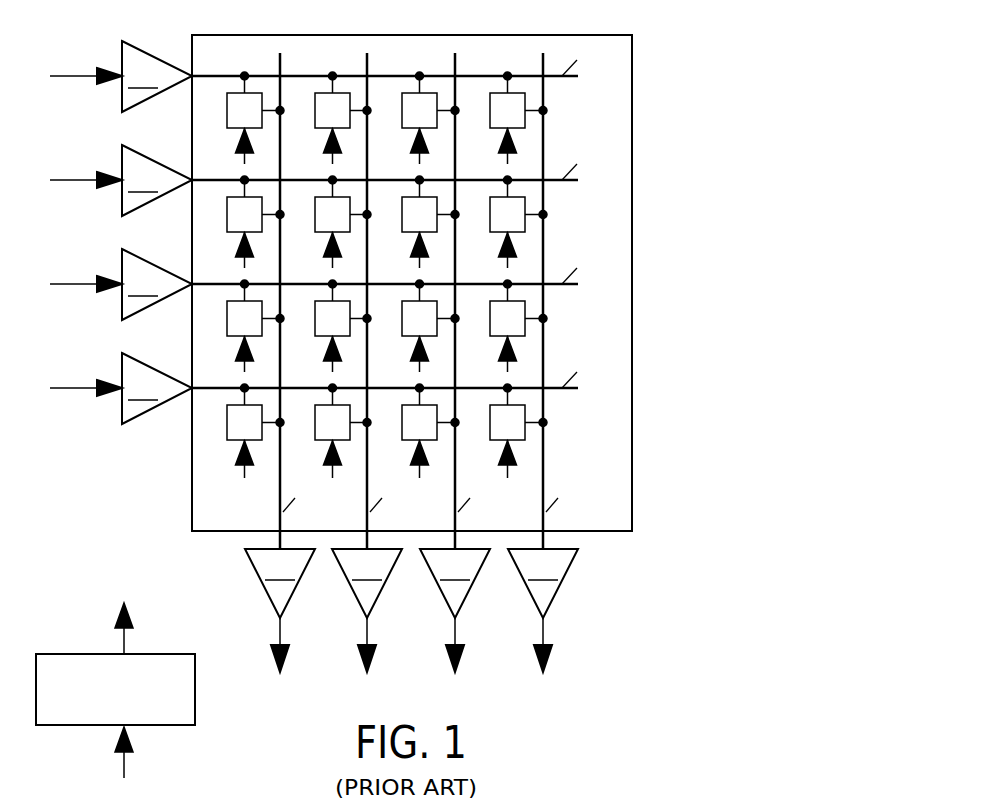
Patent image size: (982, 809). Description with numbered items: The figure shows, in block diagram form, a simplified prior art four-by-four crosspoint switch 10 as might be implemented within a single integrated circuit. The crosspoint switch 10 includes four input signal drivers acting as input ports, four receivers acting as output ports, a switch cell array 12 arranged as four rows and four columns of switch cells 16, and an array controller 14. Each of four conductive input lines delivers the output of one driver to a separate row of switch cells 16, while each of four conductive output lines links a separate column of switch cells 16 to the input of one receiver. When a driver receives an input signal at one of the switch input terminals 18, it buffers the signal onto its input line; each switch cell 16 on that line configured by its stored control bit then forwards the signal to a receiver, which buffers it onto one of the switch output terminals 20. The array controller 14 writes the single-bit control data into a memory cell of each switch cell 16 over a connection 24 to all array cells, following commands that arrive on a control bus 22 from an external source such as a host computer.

The crosspoint switch 10 is at (352, 353).
The switch cell array 12 is at (562, 35).
The array controller 14 is at (183, 716).
The switch cell 16 is at (257, 121).
The switch input terminal 18 is at (83, 77).
The switch output terminal 20 is at (370, 632).
The control bus 22 is at (124, 763).
The control line 24 is at (118, 633).